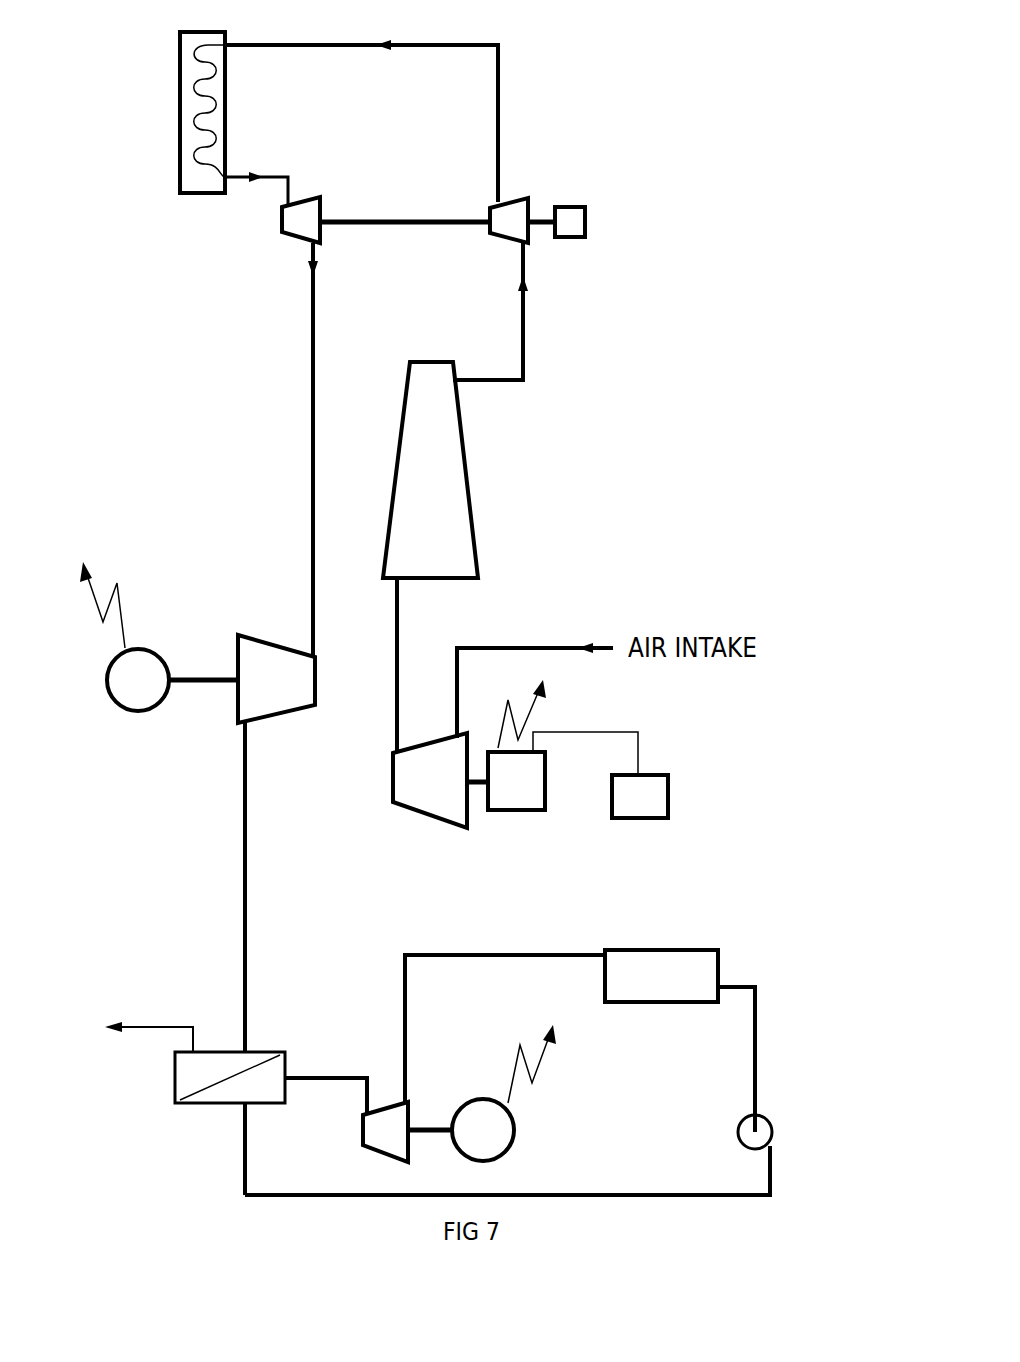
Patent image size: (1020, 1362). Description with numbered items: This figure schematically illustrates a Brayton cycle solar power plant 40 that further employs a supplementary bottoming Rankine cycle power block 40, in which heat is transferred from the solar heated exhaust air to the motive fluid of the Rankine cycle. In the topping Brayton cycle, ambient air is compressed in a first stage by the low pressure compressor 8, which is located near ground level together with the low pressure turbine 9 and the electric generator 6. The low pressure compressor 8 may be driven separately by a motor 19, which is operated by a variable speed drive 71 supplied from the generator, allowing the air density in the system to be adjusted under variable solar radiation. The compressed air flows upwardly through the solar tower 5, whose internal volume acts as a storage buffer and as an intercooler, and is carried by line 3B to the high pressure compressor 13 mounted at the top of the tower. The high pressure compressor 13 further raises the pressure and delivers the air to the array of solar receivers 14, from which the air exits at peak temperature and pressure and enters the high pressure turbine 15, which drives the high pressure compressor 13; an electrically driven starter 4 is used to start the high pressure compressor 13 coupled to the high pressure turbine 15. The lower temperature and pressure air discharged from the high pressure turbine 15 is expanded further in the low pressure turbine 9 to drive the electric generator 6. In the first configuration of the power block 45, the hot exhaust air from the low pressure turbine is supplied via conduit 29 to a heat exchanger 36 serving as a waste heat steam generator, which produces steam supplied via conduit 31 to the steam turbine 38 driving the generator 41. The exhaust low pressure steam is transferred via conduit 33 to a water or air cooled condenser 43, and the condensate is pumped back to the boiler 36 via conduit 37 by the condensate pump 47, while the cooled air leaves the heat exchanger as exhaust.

The array of solar receivers 14 is at (190, 30).
The high pressure turbine (HPT) 15 is at (304, 196).
The high pressure compressor (HPC) 13 is at (511, 200).
The electrically driven starter (S) 4 is at (562, 207).
The intercooled air line 3B is at (525, 358).
The solar tower 5 is at (470, 491).
The electric generator (GEN) 6 is at (150, 650).
The low pressure turbine (LPT) 9 is at (262, 641).
The low pressure compressor (LPC) 8 is at (412, 748).
The starter/variable speed motor (D) 19 is at (513, 812).
The variable speed drive (VFD) 71 is at (662, 775).
The conduit 29 is at (246, 998).
The heat exchanger (waste heat steam generator) 36 is at (200, 1052).
The conduit 31 is at (303, 1078).
The power block 45 is at (244, 1158).
The conduit 33 is at (530, 952).
The condenser 43 is at (652, 948).
The condensate pump (P) 47 is at (738, 1120).
The generator (G) 41 is at (470, 1098).
The steam turbine (ST) 38 is at (392, 1158).
The conduit 37 is at (543, 1193).
The power plant / bottoming Rankine cycle power block 40 is at (125, 1021).